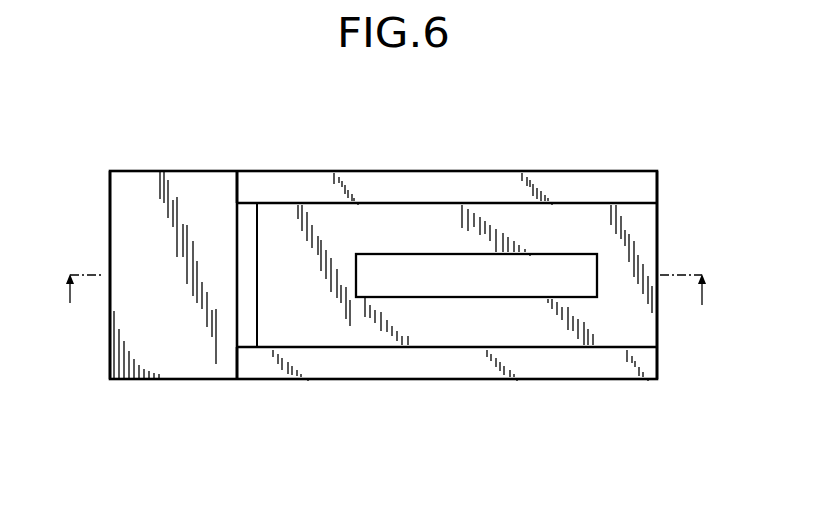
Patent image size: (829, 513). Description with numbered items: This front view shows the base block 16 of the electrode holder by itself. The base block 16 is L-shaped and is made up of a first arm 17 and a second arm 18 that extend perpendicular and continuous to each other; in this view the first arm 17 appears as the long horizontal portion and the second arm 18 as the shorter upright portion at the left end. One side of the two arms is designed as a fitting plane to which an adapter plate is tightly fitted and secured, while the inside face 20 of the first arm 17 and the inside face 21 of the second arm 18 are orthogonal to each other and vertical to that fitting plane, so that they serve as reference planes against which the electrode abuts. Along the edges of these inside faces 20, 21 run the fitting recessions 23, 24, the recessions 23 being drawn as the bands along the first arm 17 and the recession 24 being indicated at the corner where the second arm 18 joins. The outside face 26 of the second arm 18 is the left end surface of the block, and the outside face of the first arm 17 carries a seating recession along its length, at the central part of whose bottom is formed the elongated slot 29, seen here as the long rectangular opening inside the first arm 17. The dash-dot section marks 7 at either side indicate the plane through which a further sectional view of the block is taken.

The section line 7- 7 is at (386, 297).
The base block 16 is at (420, 164).
The first arm 17 is at (478, 336).
The second arm 18 is at (168, 352).
The inside face 20 is at (646, 203).
The inside face 21 is at (258, 278).
The fitting recession 23 is at (566, 183).
The fitting recession 24 is at (237, 184).
The outside face 26 is at (109, 312).
The elongated slot 29 is at (426, 285).